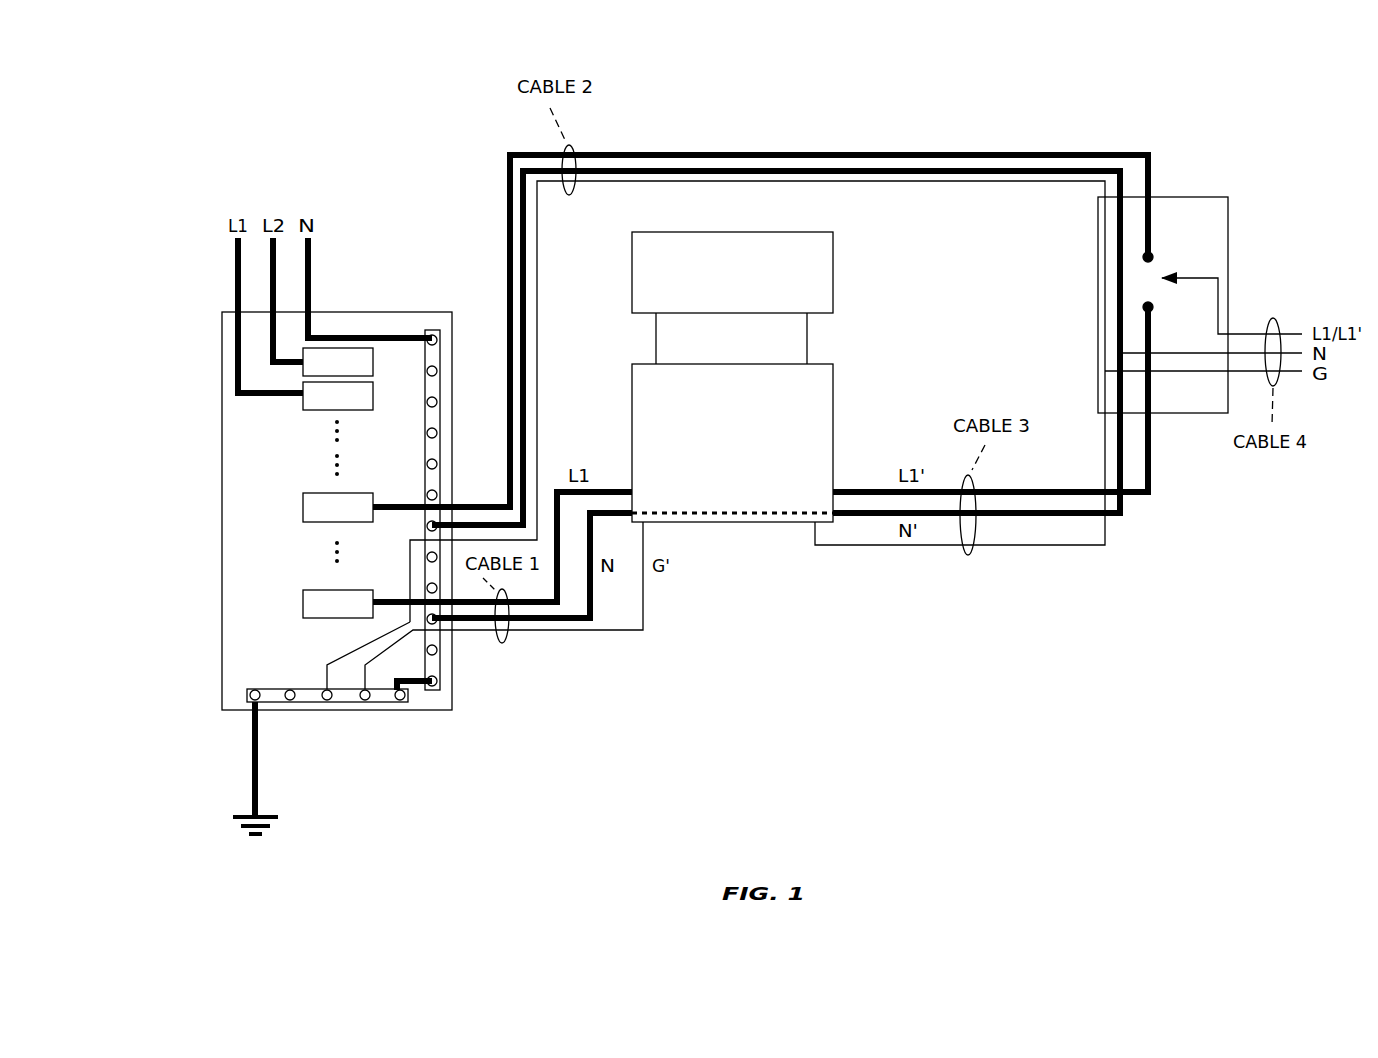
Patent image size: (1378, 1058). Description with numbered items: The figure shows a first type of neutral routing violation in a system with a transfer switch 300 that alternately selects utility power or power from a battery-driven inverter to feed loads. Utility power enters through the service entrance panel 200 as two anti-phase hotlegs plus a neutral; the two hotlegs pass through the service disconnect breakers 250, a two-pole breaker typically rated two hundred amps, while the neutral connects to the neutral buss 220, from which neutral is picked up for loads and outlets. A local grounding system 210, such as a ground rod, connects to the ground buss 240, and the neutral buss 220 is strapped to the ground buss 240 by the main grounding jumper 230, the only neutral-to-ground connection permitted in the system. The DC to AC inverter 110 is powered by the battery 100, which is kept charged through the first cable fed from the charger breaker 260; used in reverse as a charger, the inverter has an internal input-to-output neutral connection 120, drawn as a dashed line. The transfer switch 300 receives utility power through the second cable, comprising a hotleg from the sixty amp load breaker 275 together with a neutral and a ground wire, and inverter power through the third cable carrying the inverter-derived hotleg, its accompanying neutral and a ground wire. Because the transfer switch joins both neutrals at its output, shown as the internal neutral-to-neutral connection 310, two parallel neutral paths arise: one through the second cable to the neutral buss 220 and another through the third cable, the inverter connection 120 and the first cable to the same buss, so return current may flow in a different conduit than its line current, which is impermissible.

The battery 100 is at (748, 295).
The DC to AC inverter 110 is at (748, 438).
The internal input-to-output neutral connection 120 is at (725, 522).
The service entrance panel 200 is at (458, 658).
The local grounding system 210 is at (292, 823).
The neutral buss 220 is at (432, 330).
The main grounding jumper 230 is at (417, 692).
The ground buss 240 is at (352, 712).
The service disconnect breakers 250 is at (330, 362).
The charger breaker 260 is at (292, 603).
The load breaker 275 is at (292, 507).
The transfer switch 300 is at (1222, 193).
The internal N-N' connection 310 is at (1115, 265).